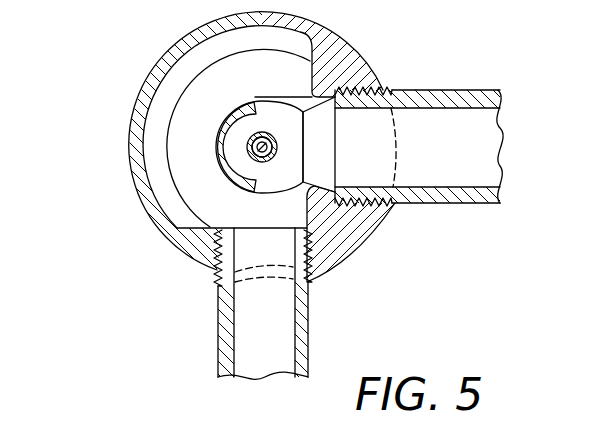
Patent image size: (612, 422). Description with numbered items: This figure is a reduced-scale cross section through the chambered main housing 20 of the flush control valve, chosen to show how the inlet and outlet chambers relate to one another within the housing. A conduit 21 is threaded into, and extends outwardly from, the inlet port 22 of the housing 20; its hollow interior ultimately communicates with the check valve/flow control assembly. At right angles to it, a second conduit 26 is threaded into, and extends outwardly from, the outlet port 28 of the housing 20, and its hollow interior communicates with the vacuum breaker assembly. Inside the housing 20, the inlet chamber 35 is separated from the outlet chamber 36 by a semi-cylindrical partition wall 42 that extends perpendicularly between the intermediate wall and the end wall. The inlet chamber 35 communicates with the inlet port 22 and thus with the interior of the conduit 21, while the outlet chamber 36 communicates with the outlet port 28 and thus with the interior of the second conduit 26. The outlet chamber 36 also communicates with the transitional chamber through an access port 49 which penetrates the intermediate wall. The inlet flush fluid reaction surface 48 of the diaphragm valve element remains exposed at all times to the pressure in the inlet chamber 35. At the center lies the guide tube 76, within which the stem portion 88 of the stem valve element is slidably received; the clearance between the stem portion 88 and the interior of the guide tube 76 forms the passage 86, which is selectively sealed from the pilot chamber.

The main housing 20 is at (133, 136).
The conduit 21 is at (450, 90).
The inlet port 22 is at (391, 204).
The second conduit 26 is at (300, 324).
The outlet port 28 is at (217, 278).
The inlet chamber 35 is at (286, 160).
The outlet chamber 36 is at (152, 104).
The semi-cylindrical partition wall 42 is at (254, 95).
The inlet flush fluid reaction surface 48 is at (253, 167).
The access port 49 is at (233, 80).
The guide tube 76 is at (253, 148).
The passage 86 is at (278, 141).
The stem portion 88 is at (257, 143).